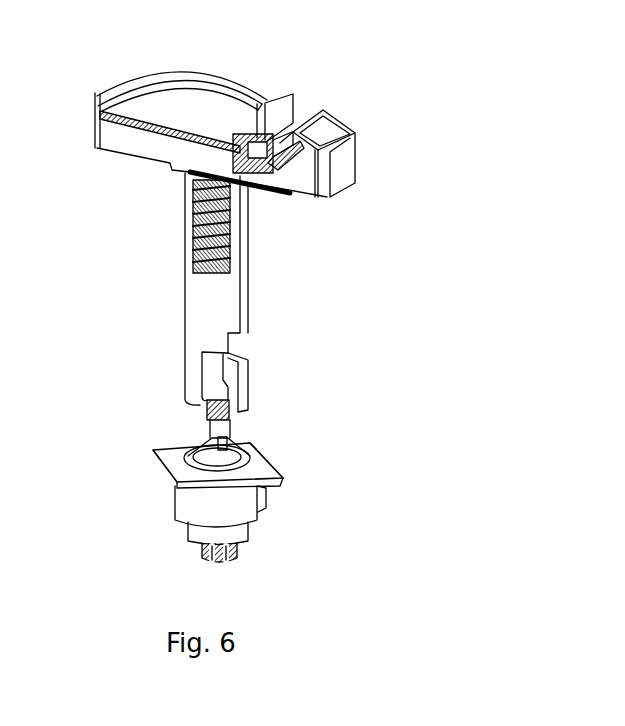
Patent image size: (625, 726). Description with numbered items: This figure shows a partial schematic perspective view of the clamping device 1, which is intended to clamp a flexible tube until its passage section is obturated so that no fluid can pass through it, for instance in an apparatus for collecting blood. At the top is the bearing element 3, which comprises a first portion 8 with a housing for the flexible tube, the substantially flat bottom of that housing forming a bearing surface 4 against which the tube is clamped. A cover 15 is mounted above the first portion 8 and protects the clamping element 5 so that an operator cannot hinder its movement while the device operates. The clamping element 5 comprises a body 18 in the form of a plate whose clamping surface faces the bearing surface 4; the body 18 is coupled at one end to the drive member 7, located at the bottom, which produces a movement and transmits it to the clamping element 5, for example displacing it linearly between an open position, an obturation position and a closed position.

The clamping device 1 is at (200, 79).
The cover 15 is at (158, 73).
The first portion 8 is at (113, 131).
The bearing surface 4 is at (253, 177).
The bearing element 3 is at (345, 165).
The clamping element 5 is at (187, 225).
The body 18 is at (205, 307).
The drive member 7 is at (225, 505).